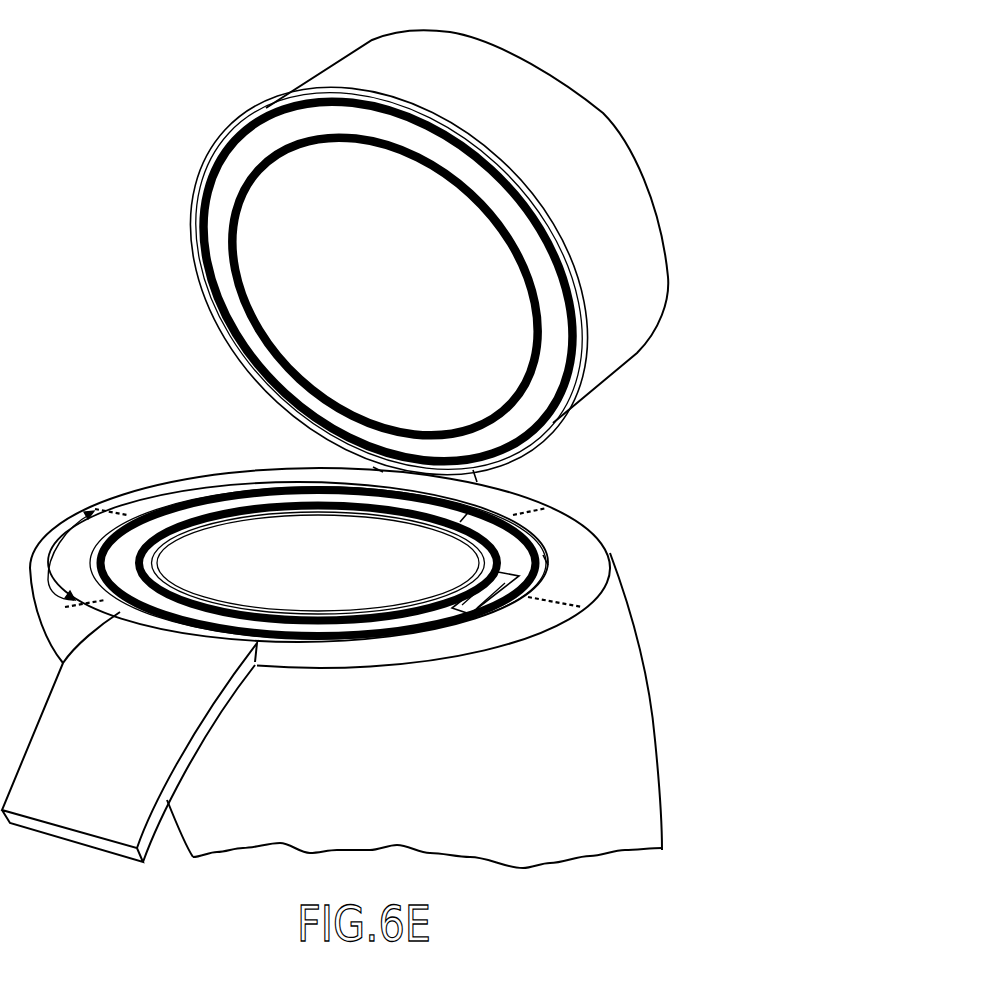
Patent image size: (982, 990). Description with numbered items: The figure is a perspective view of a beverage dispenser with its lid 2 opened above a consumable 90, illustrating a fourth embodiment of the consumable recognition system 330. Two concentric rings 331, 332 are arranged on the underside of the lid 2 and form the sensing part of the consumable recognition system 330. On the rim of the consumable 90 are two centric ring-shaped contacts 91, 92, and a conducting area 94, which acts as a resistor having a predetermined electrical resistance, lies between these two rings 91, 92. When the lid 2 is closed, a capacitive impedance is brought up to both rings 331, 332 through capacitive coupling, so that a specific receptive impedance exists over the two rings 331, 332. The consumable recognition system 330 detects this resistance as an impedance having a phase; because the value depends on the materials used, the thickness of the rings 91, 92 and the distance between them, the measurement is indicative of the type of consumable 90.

The lid 2 is at (352, 60).
The consumable recognition system 330 is at (365, 280).
The ring 331 is at (236, 196).
The ring 332 is at (222, 360).
The consumable 90 is at (362, 563).
The ring-shaped contact 91 is at (497, 490).
The ring-shaped contact 92 is at (550, 554).
The conducting area 94 is at (503, 600).